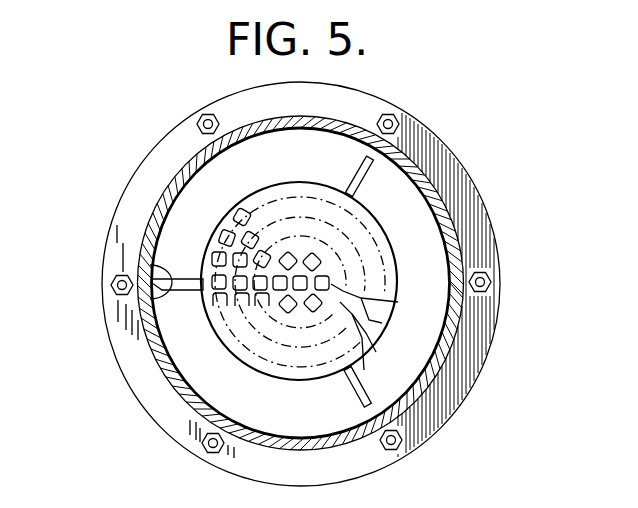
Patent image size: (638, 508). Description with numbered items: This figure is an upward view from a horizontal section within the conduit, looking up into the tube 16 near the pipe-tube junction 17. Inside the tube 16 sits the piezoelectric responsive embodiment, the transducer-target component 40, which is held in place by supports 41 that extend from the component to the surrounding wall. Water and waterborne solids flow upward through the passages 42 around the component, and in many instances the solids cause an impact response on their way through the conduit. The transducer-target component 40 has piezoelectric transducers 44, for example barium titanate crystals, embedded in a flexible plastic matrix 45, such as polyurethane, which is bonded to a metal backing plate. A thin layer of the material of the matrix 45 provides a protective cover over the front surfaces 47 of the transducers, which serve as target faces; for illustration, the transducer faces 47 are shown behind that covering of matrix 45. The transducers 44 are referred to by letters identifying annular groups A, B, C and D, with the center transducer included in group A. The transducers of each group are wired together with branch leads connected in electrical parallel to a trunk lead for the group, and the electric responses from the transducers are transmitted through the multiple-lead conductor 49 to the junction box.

The tube 16 is at (355, 132).
The pipe-tube junction 17 is at (490, 317).
The transducer-target component 40 is at (200, 213).
The supports 41 is at (155, 287).
The passages 42 is at (430, 265).
The piezoelectric transducers 44 is at (250, 232).
The flexible plastic matrix 45 is at (380, 231).
The front surfaces 47 is at (212, 281).
The multiple-lead conductor 49 is at (150, 306).
The annular group A is at (398, 302).
The annular group B is at (382, 323).
The annular group C is at (376, 352).
The annular group D is at (364, 370).